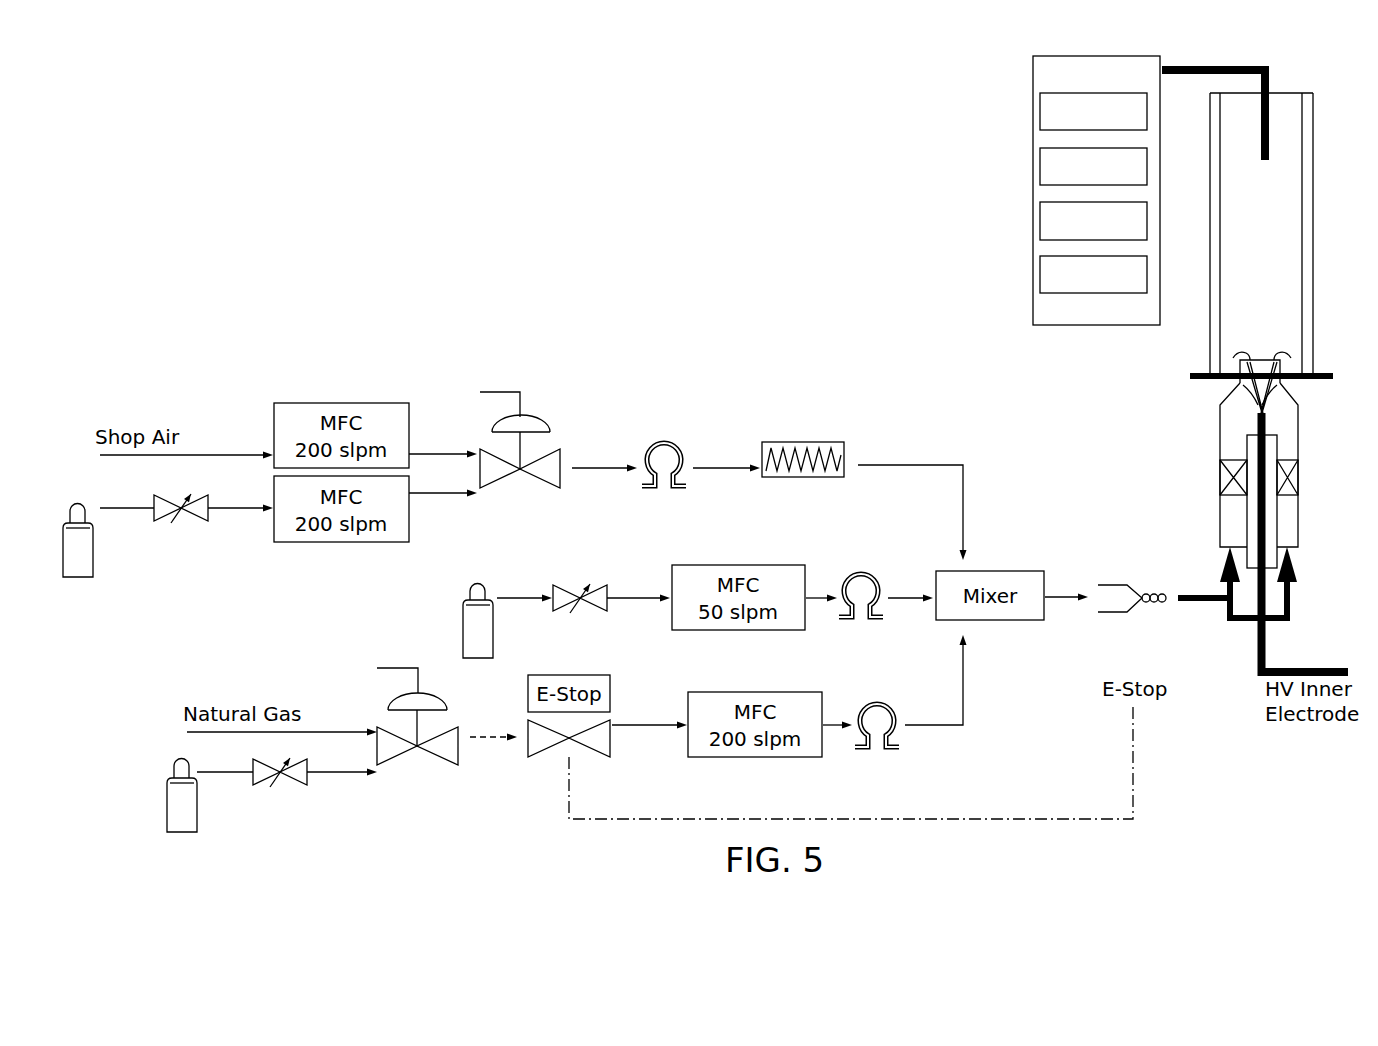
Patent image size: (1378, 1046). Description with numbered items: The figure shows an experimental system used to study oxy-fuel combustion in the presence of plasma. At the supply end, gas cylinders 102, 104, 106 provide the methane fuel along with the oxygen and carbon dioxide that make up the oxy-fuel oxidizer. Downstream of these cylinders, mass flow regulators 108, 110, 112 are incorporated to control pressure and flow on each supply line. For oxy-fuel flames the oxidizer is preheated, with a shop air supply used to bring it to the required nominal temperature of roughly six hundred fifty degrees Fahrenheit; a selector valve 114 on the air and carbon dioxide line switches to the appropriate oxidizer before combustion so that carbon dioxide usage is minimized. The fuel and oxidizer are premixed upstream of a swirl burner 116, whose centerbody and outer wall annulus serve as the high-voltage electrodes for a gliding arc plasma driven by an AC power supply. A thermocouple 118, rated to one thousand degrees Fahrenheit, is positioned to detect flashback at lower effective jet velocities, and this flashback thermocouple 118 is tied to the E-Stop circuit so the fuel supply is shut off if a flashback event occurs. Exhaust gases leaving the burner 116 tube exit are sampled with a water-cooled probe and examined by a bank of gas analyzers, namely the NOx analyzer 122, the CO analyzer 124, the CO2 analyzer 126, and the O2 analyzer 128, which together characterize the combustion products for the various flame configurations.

The gas cylinder 102 is at (197, 805).
The gas cylinder 104 is at (93, 548).
The gas cylinder 106 is at (463, 633).
The mass flow regulator 108 is at (162, 497).
The mass flow regulator 110 is at (265, 762).
The mass flow regulator 112 is at (567, 585).
The selector valve 114 is at (438, 757).
The swirl burner 116 is at (1298, 528).
The thermocouple 118 is at (1113, 583).
The NOx gas analyzer 122 is at (1040, 112).
The CO gas analyzer 124 is at (1040, 167).
The CO2 gas analyzer 126 is at (1040, 222).
The O2 gas analyzer 128 is at (1040, 275).